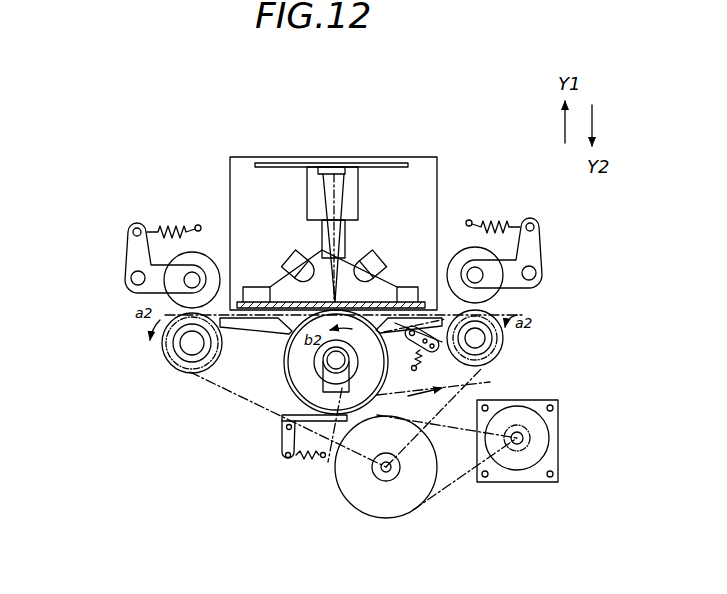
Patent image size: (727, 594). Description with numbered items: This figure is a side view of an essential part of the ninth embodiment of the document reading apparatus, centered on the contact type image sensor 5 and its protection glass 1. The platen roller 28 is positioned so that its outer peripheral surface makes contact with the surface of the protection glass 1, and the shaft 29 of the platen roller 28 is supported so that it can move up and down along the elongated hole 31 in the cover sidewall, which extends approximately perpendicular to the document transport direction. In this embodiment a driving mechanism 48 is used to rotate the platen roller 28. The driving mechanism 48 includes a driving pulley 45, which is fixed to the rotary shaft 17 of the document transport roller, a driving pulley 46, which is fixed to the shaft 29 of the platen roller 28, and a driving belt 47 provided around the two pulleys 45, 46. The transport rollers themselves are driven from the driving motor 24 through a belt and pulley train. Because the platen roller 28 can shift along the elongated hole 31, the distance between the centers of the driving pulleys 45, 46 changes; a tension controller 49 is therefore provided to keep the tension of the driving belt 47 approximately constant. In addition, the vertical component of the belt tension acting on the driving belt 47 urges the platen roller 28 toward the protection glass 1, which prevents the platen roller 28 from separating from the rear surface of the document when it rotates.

The contact type image sensor 5 is at (418, 181).
The tension controller 49 is at (392, 302).
The protection glass 1 is at (412, 298).
The rotary shaft 17 is at (482, 328).
The driving pulley 45 is at (500, 334).
The driving mechanism 48 is at (535, 378).
The driving belt 47 is at (449, 381).
The driving motor 24 is at (559, 413).
The shaft 29 is at (336, 362).
The platen roller 28 is at (290, 366).
The driving pulley 46 is at (298, 375).
The elongated hole 31 is at (314, 451).